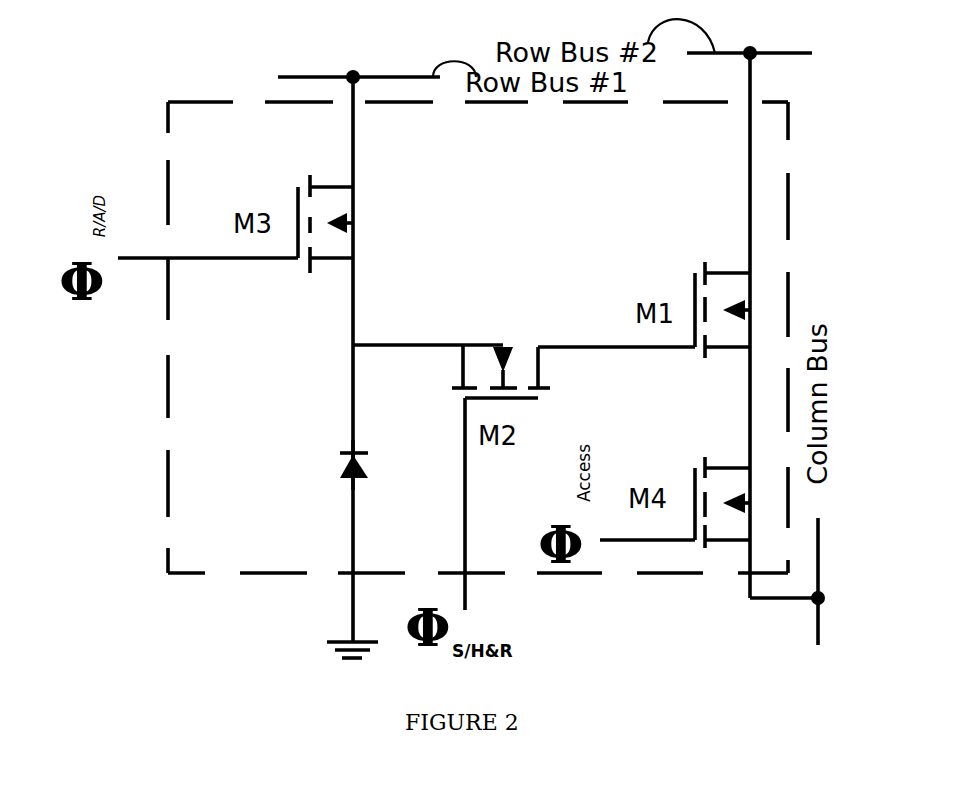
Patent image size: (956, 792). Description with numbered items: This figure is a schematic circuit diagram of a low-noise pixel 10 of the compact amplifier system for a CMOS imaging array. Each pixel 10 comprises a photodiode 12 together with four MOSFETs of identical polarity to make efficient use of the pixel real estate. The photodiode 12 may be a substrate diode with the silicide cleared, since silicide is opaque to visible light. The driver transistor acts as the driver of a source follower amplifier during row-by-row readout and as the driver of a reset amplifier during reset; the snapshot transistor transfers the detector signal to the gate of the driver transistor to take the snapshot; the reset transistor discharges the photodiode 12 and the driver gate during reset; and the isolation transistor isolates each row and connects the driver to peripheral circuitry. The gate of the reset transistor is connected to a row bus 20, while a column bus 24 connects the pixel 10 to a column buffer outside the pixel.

The pixel 10 is at (157, 133).
The photodiode 12 is at (342, 465).
The row bus 20 is at (407, 82).
The bus 24 is at (817, 625).